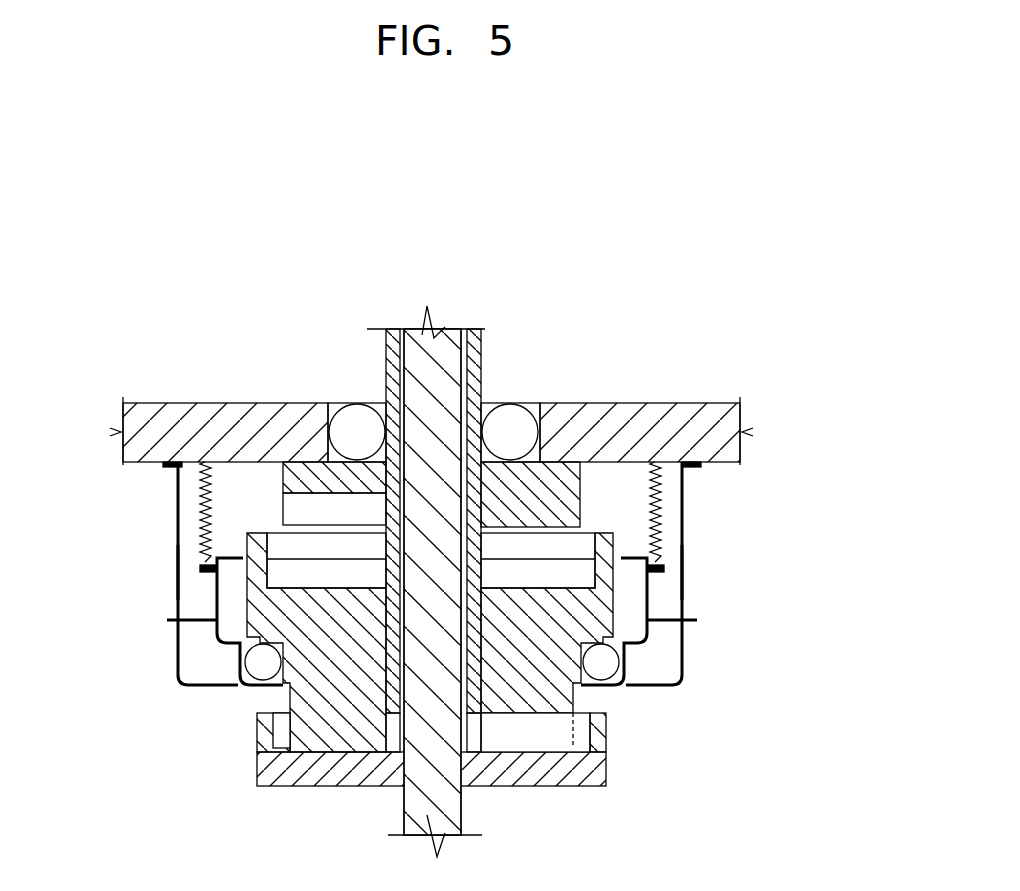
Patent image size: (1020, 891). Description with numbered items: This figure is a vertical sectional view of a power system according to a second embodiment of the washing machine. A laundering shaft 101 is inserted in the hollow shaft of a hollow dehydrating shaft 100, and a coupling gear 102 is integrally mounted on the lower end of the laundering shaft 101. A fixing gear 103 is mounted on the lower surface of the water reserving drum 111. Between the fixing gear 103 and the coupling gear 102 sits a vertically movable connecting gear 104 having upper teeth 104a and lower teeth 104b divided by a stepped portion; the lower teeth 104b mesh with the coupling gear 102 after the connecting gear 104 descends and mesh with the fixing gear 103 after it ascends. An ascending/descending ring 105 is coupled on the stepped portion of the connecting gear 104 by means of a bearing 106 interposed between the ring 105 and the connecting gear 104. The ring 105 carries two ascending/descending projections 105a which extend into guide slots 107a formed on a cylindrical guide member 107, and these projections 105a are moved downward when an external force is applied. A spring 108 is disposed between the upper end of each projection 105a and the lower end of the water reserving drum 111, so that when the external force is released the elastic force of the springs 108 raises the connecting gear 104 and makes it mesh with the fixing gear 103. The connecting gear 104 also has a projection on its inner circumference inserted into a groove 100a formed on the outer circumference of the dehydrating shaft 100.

The hollow dehydrating shaft 100 is at (478, 367).
The groove 100a is at (380, 517).
The laundering shaft 101 is at (433, 358).
The coupling gear 102 is at (593, 771).
The fixing gear 103 is at (580, 486).
The connecting gear 104 is at (580, 623).
The upper teeth 104a is at (563, 581).
The lower teeth 104b is at (322, 731).
The ascending/descending ring 105 is at (215, 599).
The ascending/descending projections 105a is at (168, 620).
The bearing 106 is at (255, 663).
The cylindrical guide member 107 is at (178, 511).
The guide slots 107a is at (178, 568).
The spring 108 is at (197, 483).
The water reserving drum 111 is at (688, 420).